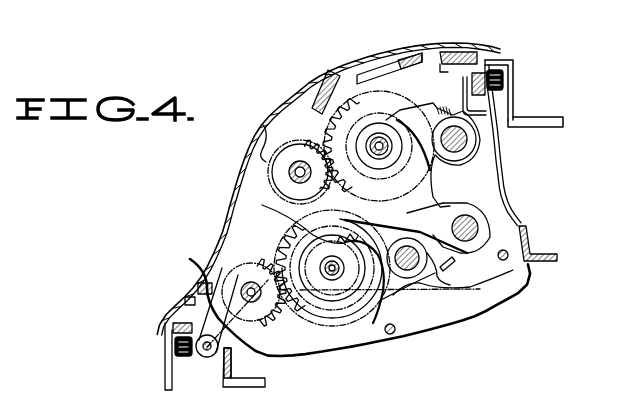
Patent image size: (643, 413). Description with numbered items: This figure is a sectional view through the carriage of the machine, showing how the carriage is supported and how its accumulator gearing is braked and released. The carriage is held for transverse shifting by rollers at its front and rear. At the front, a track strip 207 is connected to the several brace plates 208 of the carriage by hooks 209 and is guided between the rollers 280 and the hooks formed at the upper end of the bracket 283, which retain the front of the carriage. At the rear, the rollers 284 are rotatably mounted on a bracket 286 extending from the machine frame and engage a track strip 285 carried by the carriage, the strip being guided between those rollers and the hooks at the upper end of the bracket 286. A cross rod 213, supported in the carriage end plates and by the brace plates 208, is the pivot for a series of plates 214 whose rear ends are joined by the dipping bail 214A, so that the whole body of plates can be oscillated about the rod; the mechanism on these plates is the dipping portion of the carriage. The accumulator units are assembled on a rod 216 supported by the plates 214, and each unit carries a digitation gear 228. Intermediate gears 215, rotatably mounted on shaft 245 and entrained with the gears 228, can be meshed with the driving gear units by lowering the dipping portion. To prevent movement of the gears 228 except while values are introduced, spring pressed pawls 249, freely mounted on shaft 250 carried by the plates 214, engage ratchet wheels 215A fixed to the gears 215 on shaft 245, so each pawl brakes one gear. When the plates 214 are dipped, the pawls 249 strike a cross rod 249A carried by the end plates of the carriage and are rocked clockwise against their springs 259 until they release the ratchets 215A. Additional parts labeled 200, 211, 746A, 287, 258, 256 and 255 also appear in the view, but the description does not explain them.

The housing 200 is at (245, 150).
The stop block 211 is at (476, 68).
The track strip 285 is at (503, 69).
The rollers 284 is at (504, 80).
The bracket 286 is at (527, 117).
The brace plates 208 is at (262, 193).
The springs 259 is at (415, 212).
The pivot 746A is at (477, 222).
The plates 214 is at (518, 267).
The dipping bail 214A is at (538, 252).
The ratchet wheels 215A is at (300, 215).
The intermediate gears 215 is at (263, 233).
The shaft 245 is at (332, 275).
The digitation gear 228 is at (257, 253).
The rod 216 is at (250, 290).
The track strip 207 is at (190, 297).
The hooks 209 is at (182, 310).
The cross rod 213 is at (180, 318).
The rollers 280 is at (175, 346).
The bracket 283 is at (168, 358).
The foot bracket 287 is at (265, 381).
The pawls 249 is at (380, 303).
The cross rod 249A is at (391, 334).
The shaft 250 is at (410, 270).
The arm end 258 is at (436, 278).
The pin 256 is at (449, 270).
The arm 255 is at (503, 262).